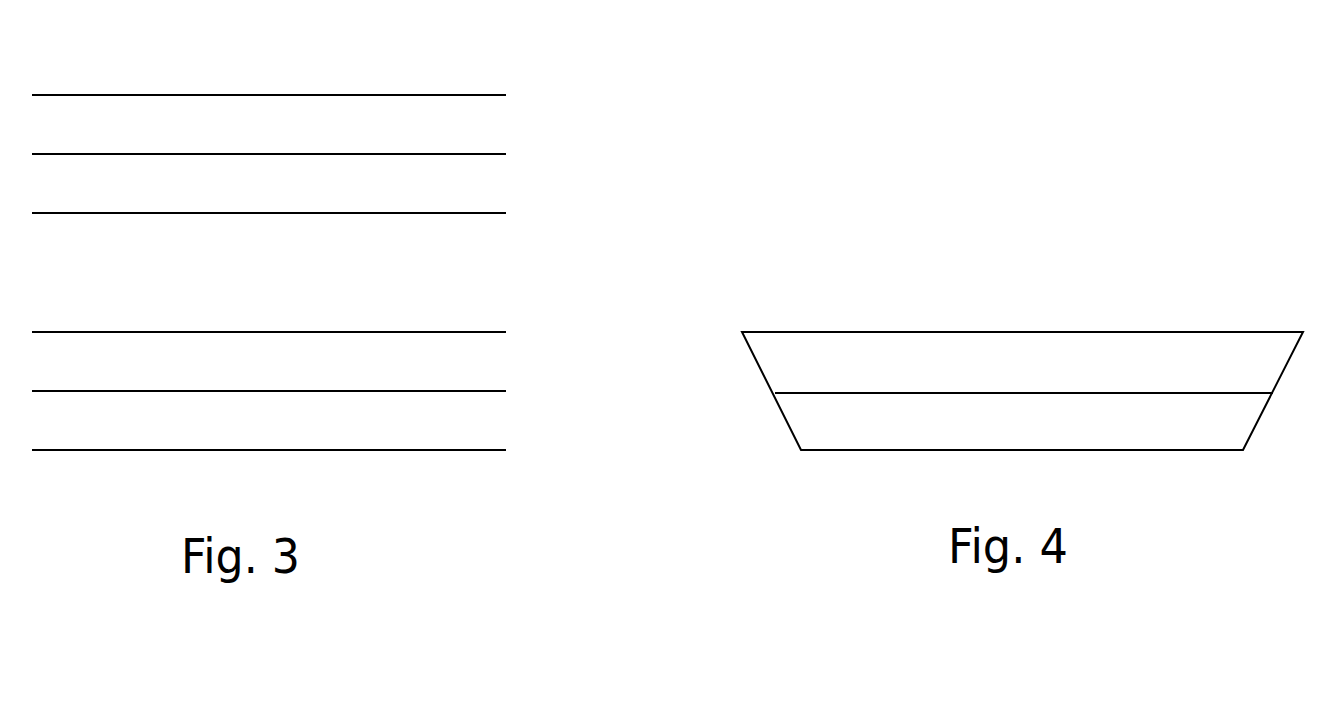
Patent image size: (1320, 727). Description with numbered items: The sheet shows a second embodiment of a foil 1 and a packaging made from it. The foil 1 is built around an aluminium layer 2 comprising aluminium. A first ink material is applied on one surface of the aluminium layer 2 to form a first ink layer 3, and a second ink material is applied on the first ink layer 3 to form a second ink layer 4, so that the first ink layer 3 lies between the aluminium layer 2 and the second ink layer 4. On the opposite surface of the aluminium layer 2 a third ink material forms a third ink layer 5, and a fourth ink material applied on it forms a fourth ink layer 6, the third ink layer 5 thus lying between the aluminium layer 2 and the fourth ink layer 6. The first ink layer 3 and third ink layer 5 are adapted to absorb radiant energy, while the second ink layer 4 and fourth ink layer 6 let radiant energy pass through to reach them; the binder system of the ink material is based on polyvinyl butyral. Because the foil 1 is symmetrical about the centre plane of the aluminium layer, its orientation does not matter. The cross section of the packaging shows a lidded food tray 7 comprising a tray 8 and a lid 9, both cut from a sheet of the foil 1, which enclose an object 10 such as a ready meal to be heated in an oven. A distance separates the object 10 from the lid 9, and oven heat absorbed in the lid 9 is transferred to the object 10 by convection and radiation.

In FIG. 3, the foil 1 is at (552, 177).
In FIG. 4, the foil 1 is at (1037, 332).
In FIG. 3, the aluminium layer 2 is at (458, 273).
In FIG. 3, the first ink layer 3 is at (422, 178).
In FIG. 3, the second ink layer 4 is at (370, 125).
In FIG. 3, the third ink layer 5 is at (447, 362).
In FIG. 3, the fourth ink layer 6 is at (358, 420).
In FIG. 4, the lidded food tray 7 is at (766, 298).
In FIG. 4, the tray 8 is at (830, 450).
In FIG. 4, the lid 9 is at (1156, 332).
In FIG. 4, the object 10 is at (1108, 420).